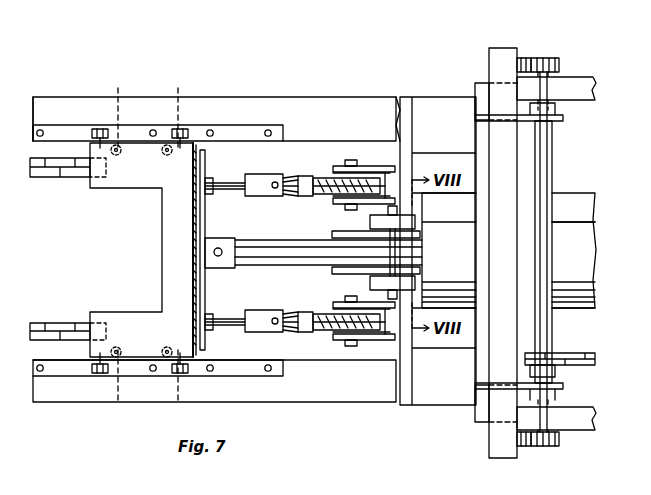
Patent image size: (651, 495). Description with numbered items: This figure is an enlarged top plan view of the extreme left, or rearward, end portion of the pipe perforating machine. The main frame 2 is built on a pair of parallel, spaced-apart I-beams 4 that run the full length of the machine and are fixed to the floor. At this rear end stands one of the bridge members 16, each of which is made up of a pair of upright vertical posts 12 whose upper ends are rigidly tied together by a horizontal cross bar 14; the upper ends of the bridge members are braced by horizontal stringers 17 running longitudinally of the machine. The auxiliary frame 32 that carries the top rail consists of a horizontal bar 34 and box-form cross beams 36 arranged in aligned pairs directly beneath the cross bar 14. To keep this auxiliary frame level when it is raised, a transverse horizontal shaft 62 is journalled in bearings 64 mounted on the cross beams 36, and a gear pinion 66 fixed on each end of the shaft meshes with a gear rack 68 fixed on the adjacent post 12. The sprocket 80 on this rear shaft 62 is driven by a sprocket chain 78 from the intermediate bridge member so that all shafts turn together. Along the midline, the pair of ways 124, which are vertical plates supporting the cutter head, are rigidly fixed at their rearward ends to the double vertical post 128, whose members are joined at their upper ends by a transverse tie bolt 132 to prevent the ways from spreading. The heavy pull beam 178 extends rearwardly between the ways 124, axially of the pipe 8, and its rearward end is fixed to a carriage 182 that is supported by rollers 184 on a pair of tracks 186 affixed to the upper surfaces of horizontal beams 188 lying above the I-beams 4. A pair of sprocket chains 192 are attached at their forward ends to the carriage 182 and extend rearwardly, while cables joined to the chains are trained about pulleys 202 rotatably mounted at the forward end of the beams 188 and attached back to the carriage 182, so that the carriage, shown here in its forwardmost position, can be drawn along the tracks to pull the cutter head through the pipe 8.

The main frame 2 is at (299, 89).
The I-beams 4 is at (426, 115).
The cylindrical pipe 8 is at (575, 308).
The vertical post 12 is at (503, 47).
The cross bar 14 is at (496, 252).
The bridge member 16 is at (484, 234).
The horizontal stringers 17 is at (592, 82).
The auxiliary frame 32 is at (585, 263).
The horizontal bar 34 is at (587, 234).
The cross beams 36 is at (476, 96).
The transverse horizontal shaft 62 is at (549, 155).
The bearings 64 is at (562, 108).
The gear pinion 66 is at (552, 65).
The gear rack 68 is at (526, 57).
The sprocket chain 78 is at (584, 353).
The sprocket 80 is at (556, 371).
The ways 124 is at (335, 231).
The vertical post 128 is at (365, 287).
The transverse tie bolt 132 is at (402, 240).
The pull beam 178 is at (257, 237).
The carriage 182 is at (167, 248).
The rollers 184 is at (102, 128).
The tracks 186 is at (240, 125).
The horizontal beams 188 is at (346, 105).
The sprocket chains 192 is at (46, 171).
The pulleys 202 is at (324, 176).